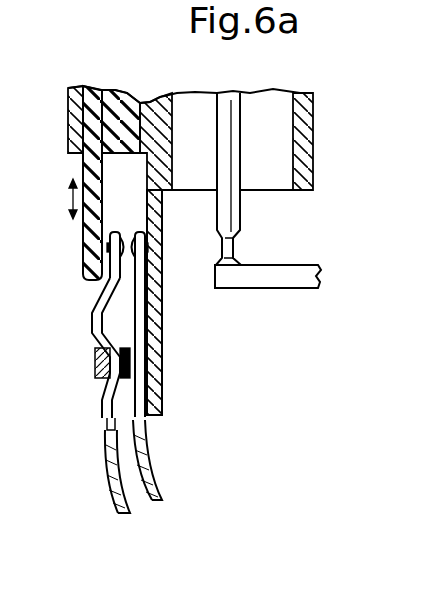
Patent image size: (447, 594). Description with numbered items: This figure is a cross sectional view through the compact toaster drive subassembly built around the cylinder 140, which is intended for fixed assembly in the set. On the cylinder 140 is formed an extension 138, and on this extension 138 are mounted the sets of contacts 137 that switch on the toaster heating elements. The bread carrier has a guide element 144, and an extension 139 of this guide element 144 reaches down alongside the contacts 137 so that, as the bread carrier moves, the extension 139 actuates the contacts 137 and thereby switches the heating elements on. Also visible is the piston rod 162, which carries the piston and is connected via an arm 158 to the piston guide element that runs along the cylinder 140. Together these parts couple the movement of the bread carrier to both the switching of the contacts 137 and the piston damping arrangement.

The sets of contacts 137 is at (140, 316).
The extension of the cylinder 138 is at (158, 305).
The extension of the guide element 139 is at (90, 252).
The cylinder 140 is at (313, 102).
The guide element 144 is at (112, 96).
The arm 158 is at (287, 278).
The piston rod 162 is at (247, 206).